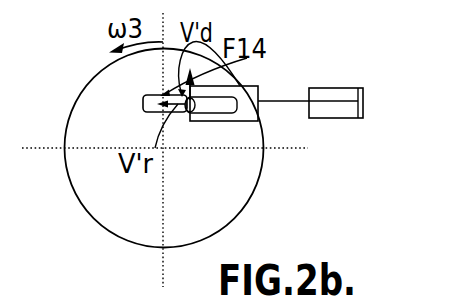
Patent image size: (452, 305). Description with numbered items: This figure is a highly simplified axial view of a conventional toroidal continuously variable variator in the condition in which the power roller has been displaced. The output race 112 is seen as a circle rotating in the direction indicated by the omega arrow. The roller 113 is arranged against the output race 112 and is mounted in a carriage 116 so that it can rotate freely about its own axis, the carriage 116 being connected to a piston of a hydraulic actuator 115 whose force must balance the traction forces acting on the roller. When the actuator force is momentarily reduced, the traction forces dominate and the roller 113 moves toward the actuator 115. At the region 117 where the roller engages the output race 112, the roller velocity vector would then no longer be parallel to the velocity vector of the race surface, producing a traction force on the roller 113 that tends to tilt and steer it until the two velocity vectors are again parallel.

The output race 112 is at (231, 222).
The roller 113 is at (140, 106).
The hydraulic actuator 115 is at (271, 100).
The carriage 116 is at (326, 88).
The region 117 is at (195, 108).